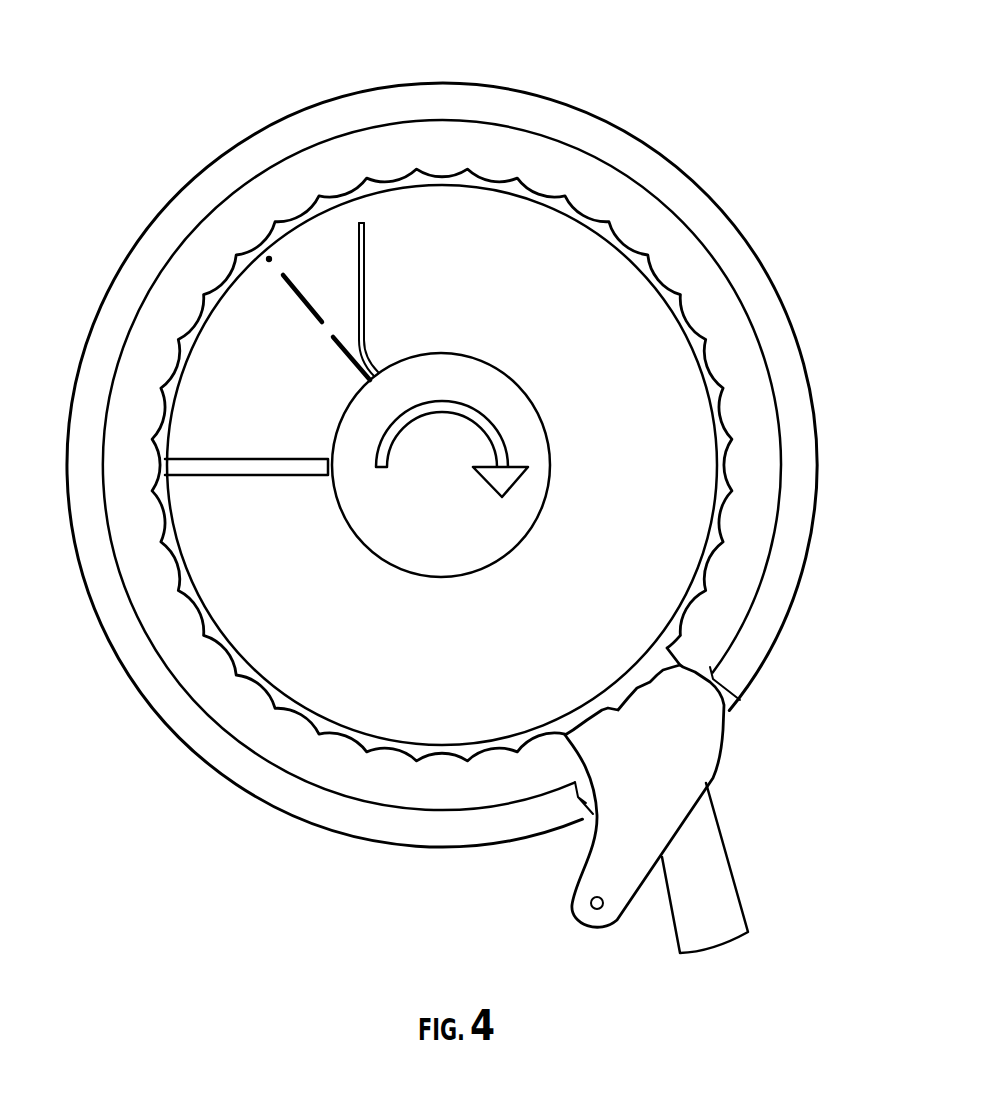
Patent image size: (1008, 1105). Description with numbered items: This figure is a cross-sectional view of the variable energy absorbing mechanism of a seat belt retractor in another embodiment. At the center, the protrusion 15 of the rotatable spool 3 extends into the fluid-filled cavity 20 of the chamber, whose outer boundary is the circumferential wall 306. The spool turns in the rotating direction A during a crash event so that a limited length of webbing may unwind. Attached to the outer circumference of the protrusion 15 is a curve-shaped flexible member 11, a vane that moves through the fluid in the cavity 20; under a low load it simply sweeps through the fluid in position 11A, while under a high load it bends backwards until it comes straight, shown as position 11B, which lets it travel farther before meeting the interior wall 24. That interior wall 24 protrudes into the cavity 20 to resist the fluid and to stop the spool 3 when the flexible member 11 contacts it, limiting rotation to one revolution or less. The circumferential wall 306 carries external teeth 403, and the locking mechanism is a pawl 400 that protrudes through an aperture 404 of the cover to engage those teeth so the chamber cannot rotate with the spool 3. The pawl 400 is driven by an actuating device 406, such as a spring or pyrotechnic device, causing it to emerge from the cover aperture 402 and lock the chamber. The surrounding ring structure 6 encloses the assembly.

The rotatable spool 3 is at (362, 598).
The protrusion 15 is at (397, 553).
The frame ring 6 is at (768, 437).
The flexible member 11 is at (404, 299).
The low load position of flexible member 11A is at (365, 253).
The high load position of flexible member 11B is at (273, 263).
The cavity 20 is at (683, 491).
The interior wall 24 is at (207, 475).
The circumferential wall 306 is at (508, 178).
The pawl 400 is at (690, 765).
The aperture of cover 402 is at (662, 278).
The external teeth 403 is at (667, 648).
The aperture of cover 404 is at (590, 820).
The actuating device 406 is at (708, 905).